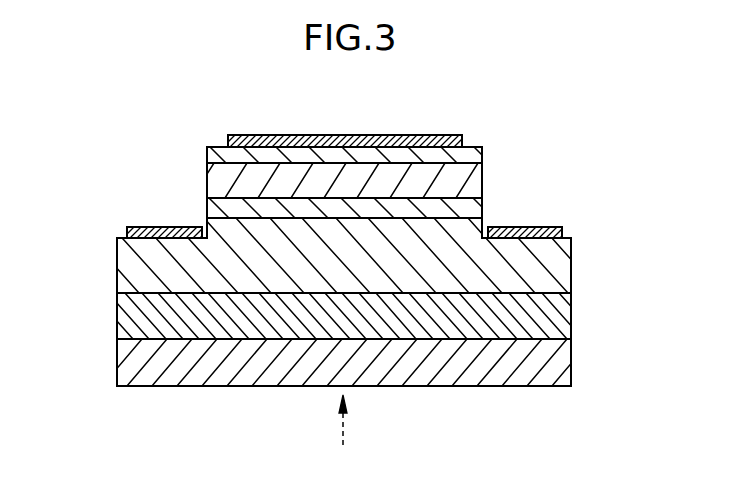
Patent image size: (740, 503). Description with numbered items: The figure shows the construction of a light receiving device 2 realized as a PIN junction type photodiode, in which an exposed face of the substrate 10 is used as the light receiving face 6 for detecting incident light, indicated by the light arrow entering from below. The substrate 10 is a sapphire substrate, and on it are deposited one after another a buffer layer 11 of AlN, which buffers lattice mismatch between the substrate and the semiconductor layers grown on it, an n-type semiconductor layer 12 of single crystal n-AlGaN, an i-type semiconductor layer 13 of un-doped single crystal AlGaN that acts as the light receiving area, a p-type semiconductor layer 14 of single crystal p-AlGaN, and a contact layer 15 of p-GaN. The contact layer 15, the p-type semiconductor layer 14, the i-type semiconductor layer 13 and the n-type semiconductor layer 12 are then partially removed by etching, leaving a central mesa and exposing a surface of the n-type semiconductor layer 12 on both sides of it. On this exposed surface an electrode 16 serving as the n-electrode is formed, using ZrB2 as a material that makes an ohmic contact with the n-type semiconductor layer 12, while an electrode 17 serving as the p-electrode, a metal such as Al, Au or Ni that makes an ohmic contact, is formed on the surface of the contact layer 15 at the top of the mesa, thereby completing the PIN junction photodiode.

The light receiving device 2 is at (128, 157).
The light receiving face 6 is at (528, 398).
The substrate 10 is at (558, 358).
The buffer layer 11 is at (558, 308).
The n-type semiconductor layer 12 is at (558, 252).
The i-type semiconductor layer 13 is at (475, 211).
The p-type semiconductor layer 14 is at (226, 187).
The contact layer 15 is at (477, 152).
The electrode 16 is at (128, 227).
The electrode 17 is at (407, 135).